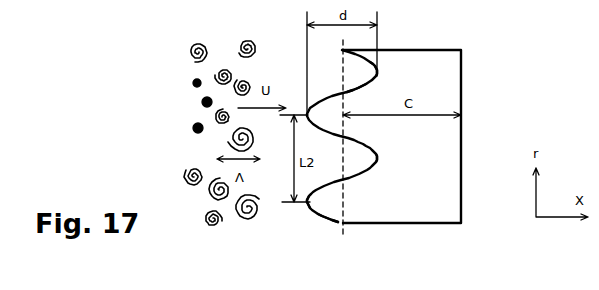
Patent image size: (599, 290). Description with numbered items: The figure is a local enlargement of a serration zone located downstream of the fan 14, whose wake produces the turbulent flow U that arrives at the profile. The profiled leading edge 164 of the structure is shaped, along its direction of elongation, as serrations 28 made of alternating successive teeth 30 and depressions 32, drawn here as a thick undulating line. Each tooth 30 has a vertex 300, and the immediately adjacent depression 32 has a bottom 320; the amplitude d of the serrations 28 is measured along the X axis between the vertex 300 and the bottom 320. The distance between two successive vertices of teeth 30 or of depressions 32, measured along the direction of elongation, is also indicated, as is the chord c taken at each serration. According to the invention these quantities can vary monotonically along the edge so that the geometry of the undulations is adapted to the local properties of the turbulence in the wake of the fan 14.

The fan 14 is at (195, 133).
The vertex of tooth 300 is at (307, 114).
The bottom of depression 320 is at (378, 77).
The serrations 28 is at (357, 88).
The depression 32 is at (367, 163).
The tooth 30 is at (310, 205).
The leading edge 164 is at (322, 223).